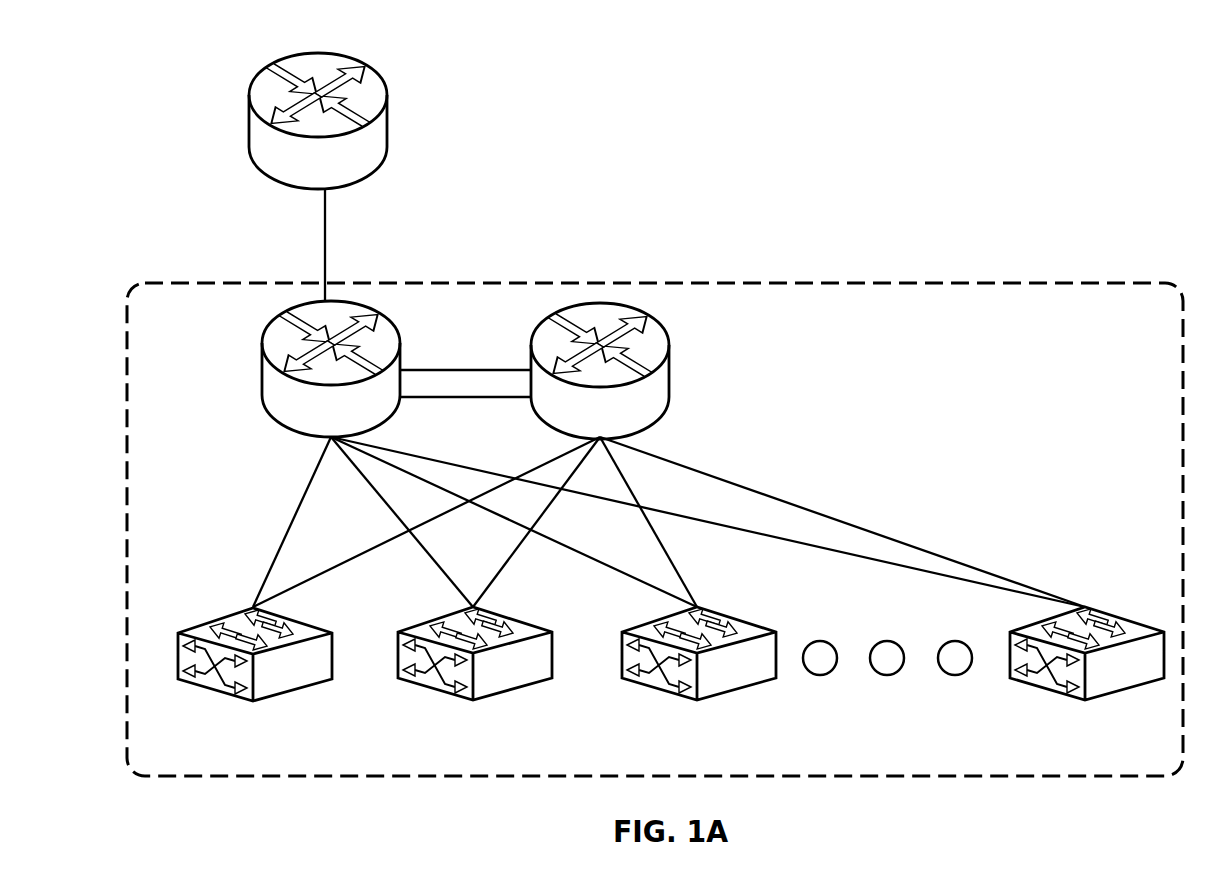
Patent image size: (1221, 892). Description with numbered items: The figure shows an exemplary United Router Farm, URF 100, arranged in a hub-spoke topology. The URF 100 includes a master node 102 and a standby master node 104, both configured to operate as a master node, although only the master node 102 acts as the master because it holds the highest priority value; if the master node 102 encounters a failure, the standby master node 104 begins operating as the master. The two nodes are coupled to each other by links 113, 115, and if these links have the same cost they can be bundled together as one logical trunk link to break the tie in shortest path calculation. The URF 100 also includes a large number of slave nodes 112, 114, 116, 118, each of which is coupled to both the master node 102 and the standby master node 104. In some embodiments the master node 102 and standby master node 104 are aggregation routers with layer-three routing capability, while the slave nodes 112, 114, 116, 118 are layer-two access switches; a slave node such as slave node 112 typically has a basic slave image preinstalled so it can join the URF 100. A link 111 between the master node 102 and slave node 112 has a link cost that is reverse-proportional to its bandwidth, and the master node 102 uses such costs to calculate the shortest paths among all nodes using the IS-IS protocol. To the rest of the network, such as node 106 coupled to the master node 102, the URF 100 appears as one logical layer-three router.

The United Router Farm (URF) 100 is at (1042, 283).
The master node 102 is at (372, 307).
The standby master node 104 is at (668, 345).
The node 106 is at (386, 122).
The link 111 is at (293, 511).
The slave node 112 is at (253, 703).
The link 113 is at (470, 399).
The slave node 114 is at (473, 700).
The link 115 is at (495, 370).
The slave node 116 is at (697, 700).
The slave node 118 is at (1085, 700).